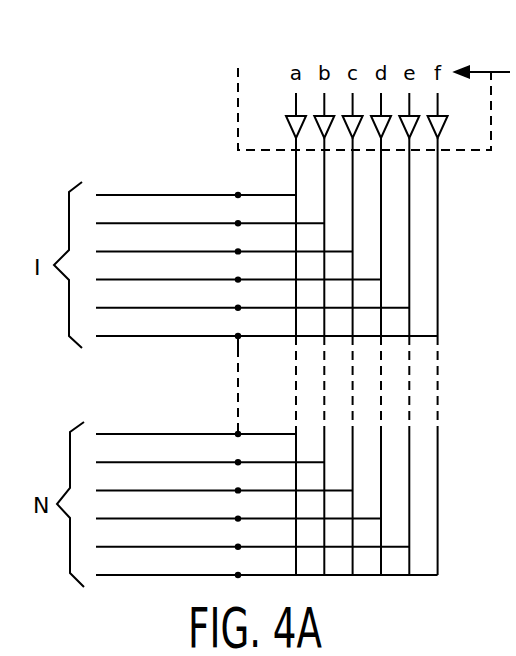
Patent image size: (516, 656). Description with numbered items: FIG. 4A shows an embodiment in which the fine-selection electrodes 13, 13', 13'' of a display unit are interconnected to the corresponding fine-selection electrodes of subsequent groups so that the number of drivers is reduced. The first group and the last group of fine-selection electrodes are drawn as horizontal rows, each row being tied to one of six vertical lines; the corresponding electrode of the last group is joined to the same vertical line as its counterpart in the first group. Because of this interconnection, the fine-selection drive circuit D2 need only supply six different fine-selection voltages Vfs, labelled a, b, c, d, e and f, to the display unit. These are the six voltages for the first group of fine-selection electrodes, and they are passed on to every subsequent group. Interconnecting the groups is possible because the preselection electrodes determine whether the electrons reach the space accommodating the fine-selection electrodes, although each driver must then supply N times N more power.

The fine-selection electrode 13 is at (196, 159).
The fine-selection electrode 13' is at (210, 190).
The fine-selection electrode 13'' is at (224, 188).
The fine-selection drive circuit D2 is at (232, 78).
The fine-selection voltages Vfs is at (482, 59).